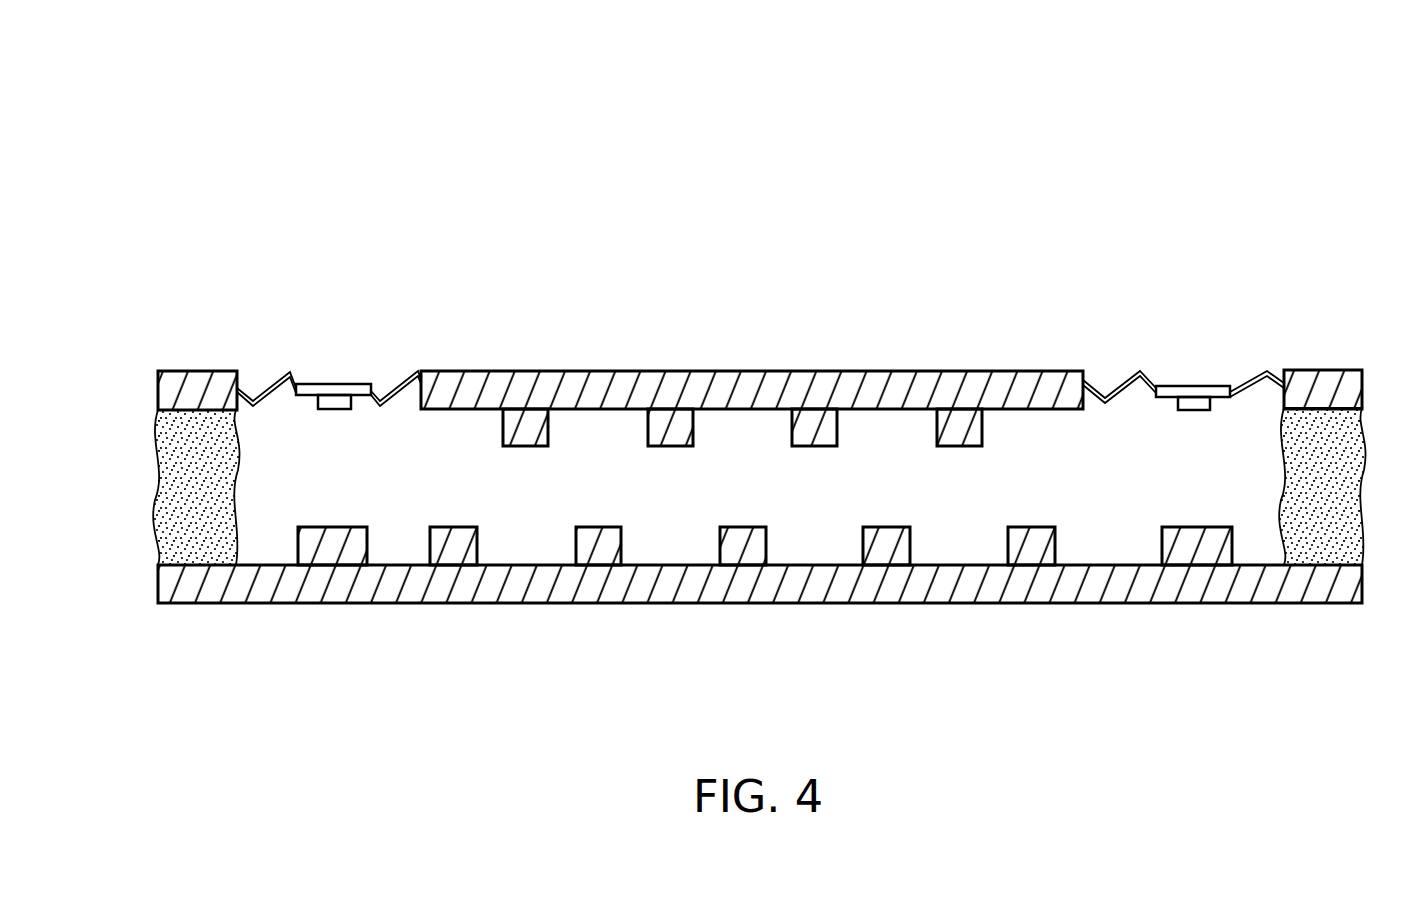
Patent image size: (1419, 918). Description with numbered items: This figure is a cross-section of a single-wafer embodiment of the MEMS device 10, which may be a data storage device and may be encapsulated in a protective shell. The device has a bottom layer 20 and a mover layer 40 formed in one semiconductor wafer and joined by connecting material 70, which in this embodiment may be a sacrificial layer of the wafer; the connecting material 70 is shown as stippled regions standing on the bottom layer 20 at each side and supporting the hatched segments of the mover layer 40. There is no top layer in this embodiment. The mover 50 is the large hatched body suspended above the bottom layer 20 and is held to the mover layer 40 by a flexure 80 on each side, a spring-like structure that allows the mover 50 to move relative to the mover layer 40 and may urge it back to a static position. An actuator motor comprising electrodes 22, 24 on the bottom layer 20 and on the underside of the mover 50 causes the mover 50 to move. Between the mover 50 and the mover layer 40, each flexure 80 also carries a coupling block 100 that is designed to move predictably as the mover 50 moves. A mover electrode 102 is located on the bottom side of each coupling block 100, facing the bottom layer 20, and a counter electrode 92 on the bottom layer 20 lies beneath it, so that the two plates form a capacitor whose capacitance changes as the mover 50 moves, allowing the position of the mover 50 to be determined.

The MEMS device 10 is at (470, 110).
The bottom layer 20 is at (178, 590).
The electrodes 22 is at (1030, 545).
The electrodes 24 is at (542, 432).
The mover layer 40 is at (185, 386).
The mover 50 is at (793, 376).
The connecting material 70 is at (188, 500).
The flexure 80 is at (395, 380).
The counter electrode 92 is at (355, 537).
The coupling block 100 is at (347, 382).
The mover electrode 102 is at (345, 402).